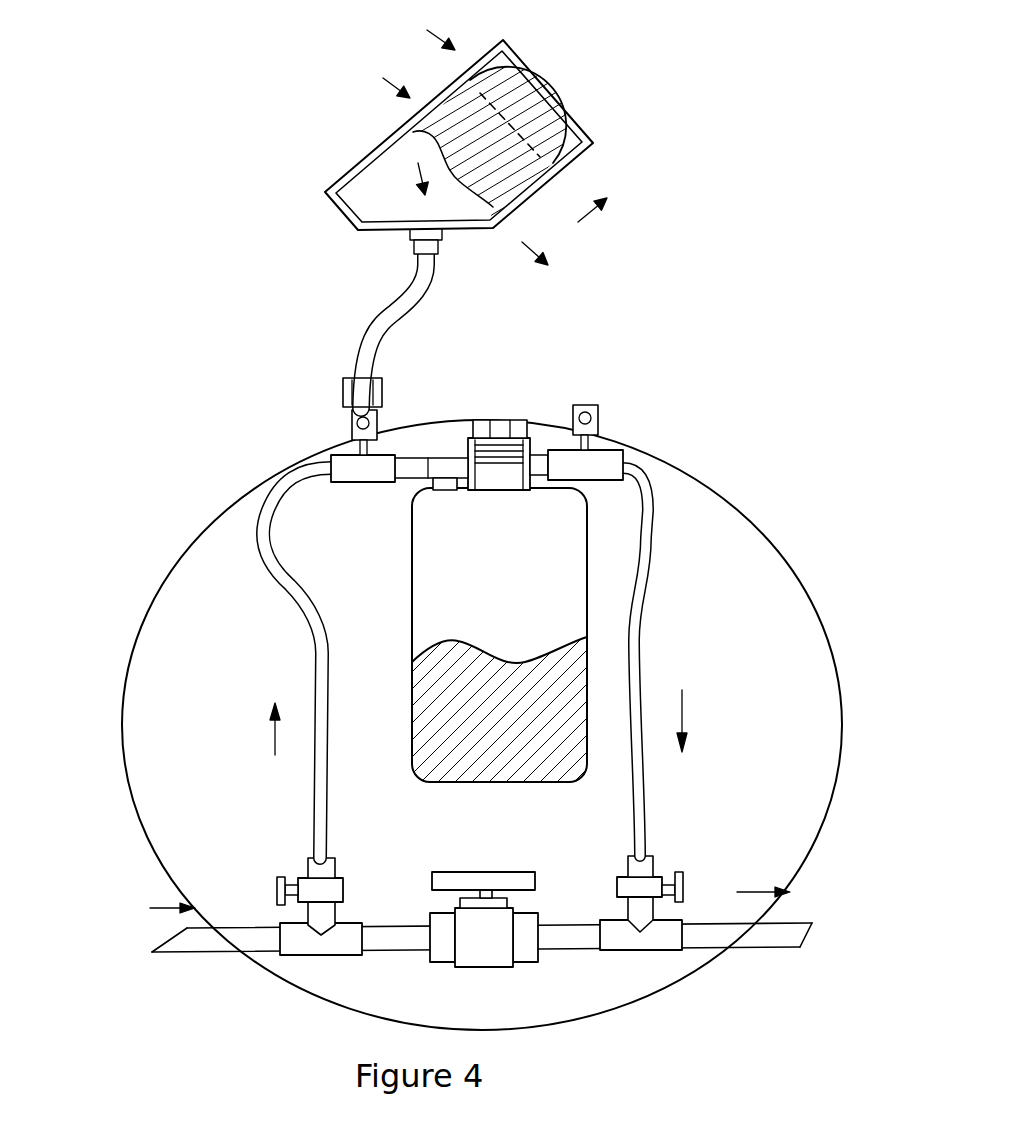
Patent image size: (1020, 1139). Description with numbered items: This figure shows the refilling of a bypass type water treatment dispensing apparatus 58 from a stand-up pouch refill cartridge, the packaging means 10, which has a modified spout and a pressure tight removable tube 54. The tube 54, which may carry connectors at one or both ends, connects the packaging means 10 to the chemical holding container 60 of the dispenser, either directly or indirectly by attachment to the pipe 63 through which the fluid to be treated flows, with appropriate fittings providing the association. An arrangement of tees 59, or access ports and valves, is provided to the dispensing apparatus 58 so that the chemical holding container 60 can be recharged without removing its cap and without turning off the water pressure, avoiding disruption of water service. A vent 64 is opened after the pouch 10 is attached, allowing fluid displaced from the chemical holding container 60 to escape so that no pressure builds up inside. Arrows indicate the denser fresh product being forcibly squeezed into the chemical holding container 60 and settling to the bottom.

The packaging means 10 is at (540, 60).
The tube 54 is at (380, 301).
The water treatment dispensing apparatus 58 is at (128, 793).
The tees 59 is at (390, 445).
The chemical holding container 60 is at (550, 600).
The pipe 63 is at (240, 531).
The vent 64 is at (610, 441).